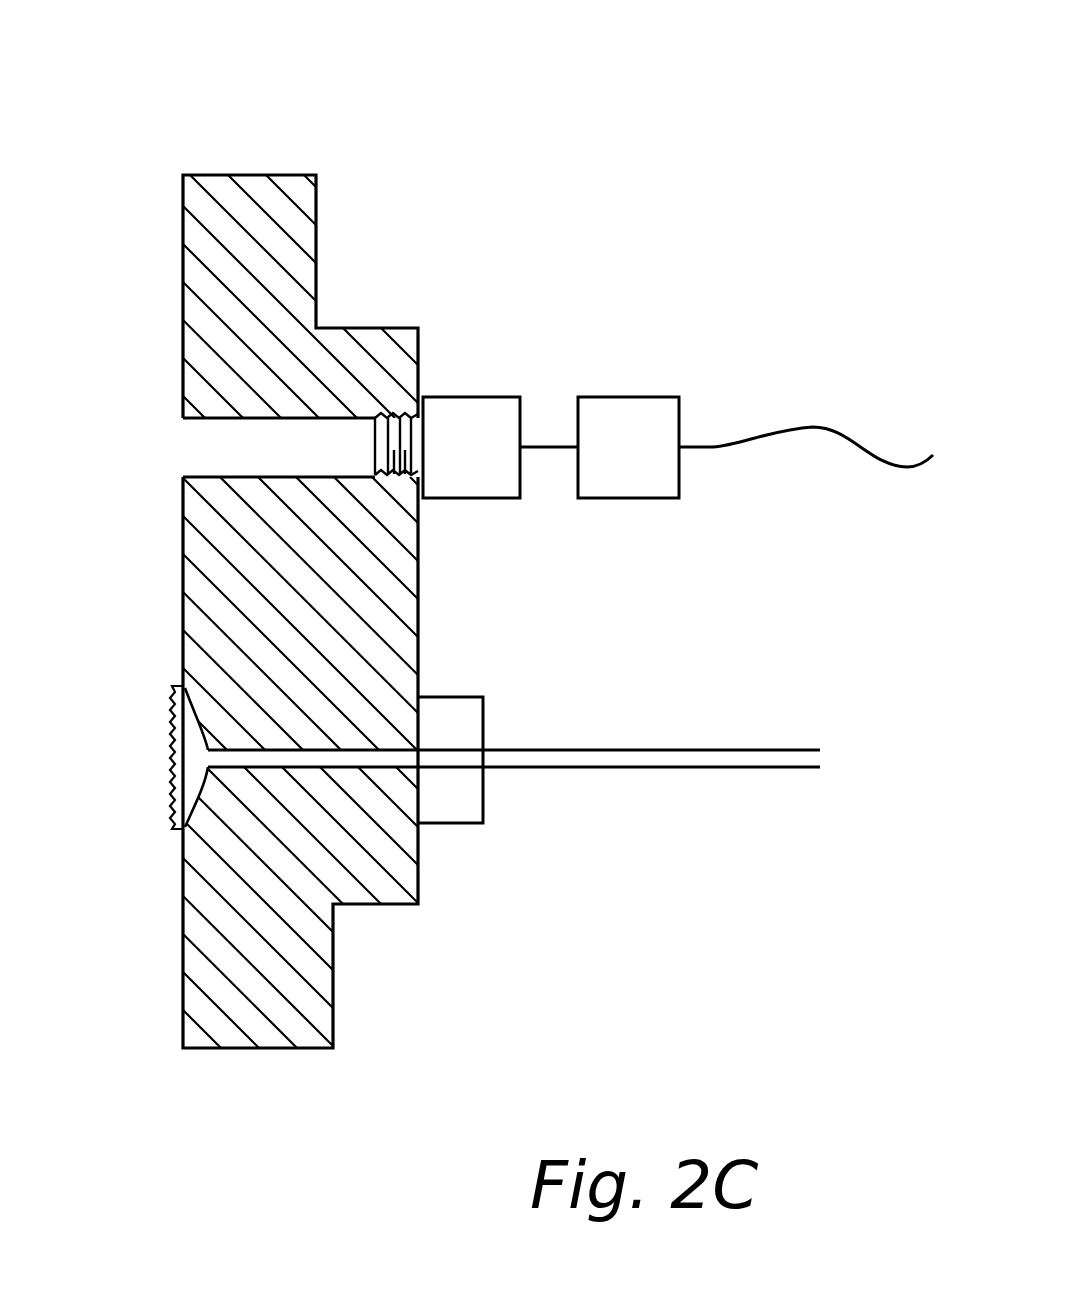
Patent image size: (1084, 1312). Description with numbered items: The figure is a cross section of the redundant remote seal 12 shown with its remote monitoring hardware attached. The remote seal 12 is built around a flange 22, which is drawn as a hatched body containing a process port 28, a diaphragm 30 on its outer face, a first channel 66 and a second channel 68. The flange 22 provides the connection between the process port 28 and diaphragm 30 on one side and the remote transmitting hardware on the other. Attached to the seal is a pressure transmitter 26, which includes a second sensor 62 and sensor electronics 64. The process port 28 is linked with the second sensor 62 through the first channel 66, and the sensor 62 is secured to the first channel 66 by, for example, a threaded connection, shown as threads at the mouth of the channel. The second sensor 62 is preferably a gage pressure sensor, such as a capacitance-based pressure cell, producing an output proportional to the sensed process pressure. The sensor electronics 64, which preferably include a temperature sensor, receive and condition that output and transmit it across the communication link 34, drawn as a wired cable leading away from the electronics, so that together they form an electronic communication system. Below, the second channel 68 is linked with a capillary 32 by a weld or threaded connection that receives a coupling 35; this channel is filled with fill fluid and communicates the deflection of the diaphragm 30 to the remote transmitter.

The redundant remote seal 12 is at (340, 157).
The flange 22 is at (288, 1036).
The pressure transmitter 26 is at (553, 372).
The process port 28 is at (200, 447).
The diaphragm 30 is at (175, 803).
The capillary 32 is at (600, 752).
The communication link 34 is at (755, 438).
The coupling 35 is at (483, 709).
The second sensor 62 is at (450, 450).
The sensor electronics 64 is at (607, 464).
The first channel 66 is at (333, 452).
The second channel 68 is at (320, 768).